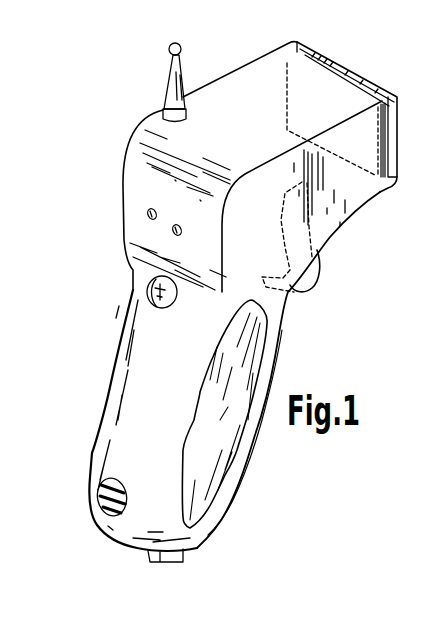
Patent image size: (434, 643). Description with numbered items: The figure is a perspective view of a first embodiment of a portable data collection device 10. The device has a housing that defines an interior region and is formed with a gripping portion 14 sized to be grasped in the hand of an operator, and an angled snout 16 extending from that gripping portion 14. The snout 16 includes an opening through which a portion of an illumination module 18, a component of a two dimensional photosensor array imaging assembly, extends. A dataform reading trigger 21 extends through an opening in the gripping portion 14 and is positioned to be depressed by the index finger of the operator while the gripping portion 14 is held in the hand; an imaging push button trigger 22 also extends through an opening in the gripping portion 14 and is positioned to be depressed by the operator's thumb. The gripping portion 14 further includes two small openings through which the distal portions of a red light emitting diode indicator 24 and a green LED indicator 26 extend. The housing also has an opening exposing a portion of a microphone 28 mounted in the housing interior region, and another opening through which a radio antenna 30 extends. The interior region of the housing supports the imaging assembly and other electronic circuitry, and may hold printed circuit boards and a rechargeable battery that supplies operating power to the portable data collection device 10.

The portable data collection device 10 is at (432, 243).
The gripping portion 14 is at (138, 385).
The angled snout 16 is at (247, 92).
The illumination module 18 is at (359, 78).
The dataform reading trigger 21 is at (318, 268).
The imaging push button trigger 22 is at (147, 288).
The red light emitting diode indicator 24 is at (148, 215).
The green LED indicator 26 is at (173, 230).
The microphone 28 is at (98, 506).
The radio antenna 30 is at (173, 82).